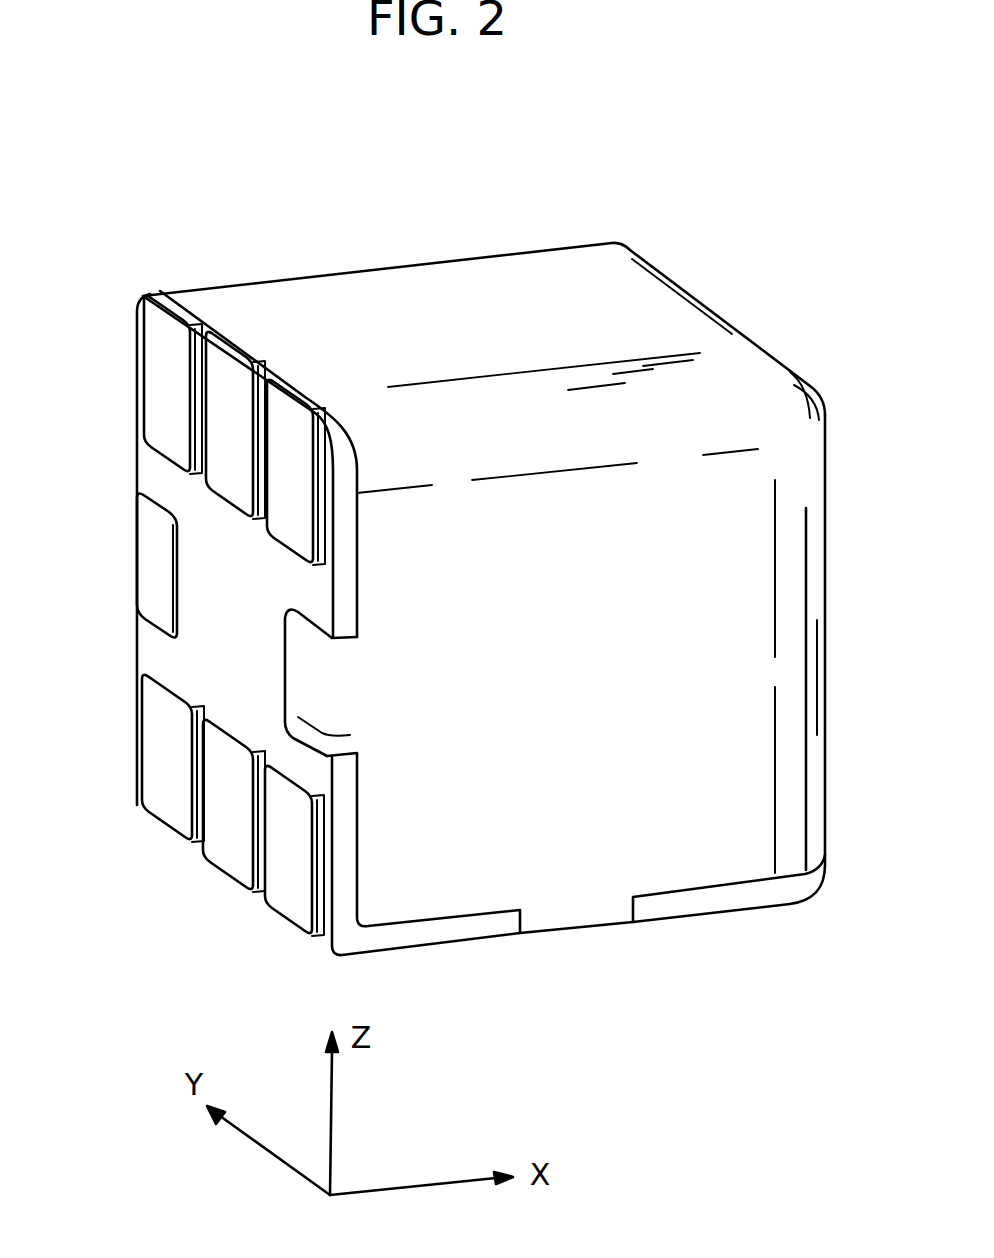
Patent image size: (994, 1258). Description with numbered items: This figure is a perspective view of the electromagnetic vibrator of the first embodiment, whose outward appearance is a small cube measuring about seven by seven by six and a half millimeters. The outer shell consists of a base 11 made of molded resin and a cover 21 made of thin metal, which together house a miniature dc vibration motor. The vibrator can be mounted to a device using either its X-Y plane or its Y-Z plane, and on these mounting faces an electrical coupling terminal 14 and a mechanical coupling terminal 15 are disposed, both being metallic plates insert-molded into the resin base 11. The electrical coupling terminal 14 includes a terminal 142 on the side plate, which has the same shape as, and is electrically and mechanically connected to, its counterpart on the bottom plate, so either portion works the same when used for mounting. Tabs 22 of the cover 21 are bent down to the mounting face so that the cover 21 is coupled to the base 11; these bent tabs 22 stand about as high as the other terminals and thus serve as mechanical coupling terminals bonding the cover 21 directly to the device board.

The base 11 is at (155, 657).
The electrical coupling terminal 14 is at (170, 815).
The terminal on the side plate 142 is at (278, 870).
The mechanical coupling terminal 15 is at (280, 408).
The cover 21 is at (580, 278).
The tabs 22 is at (303, 662).